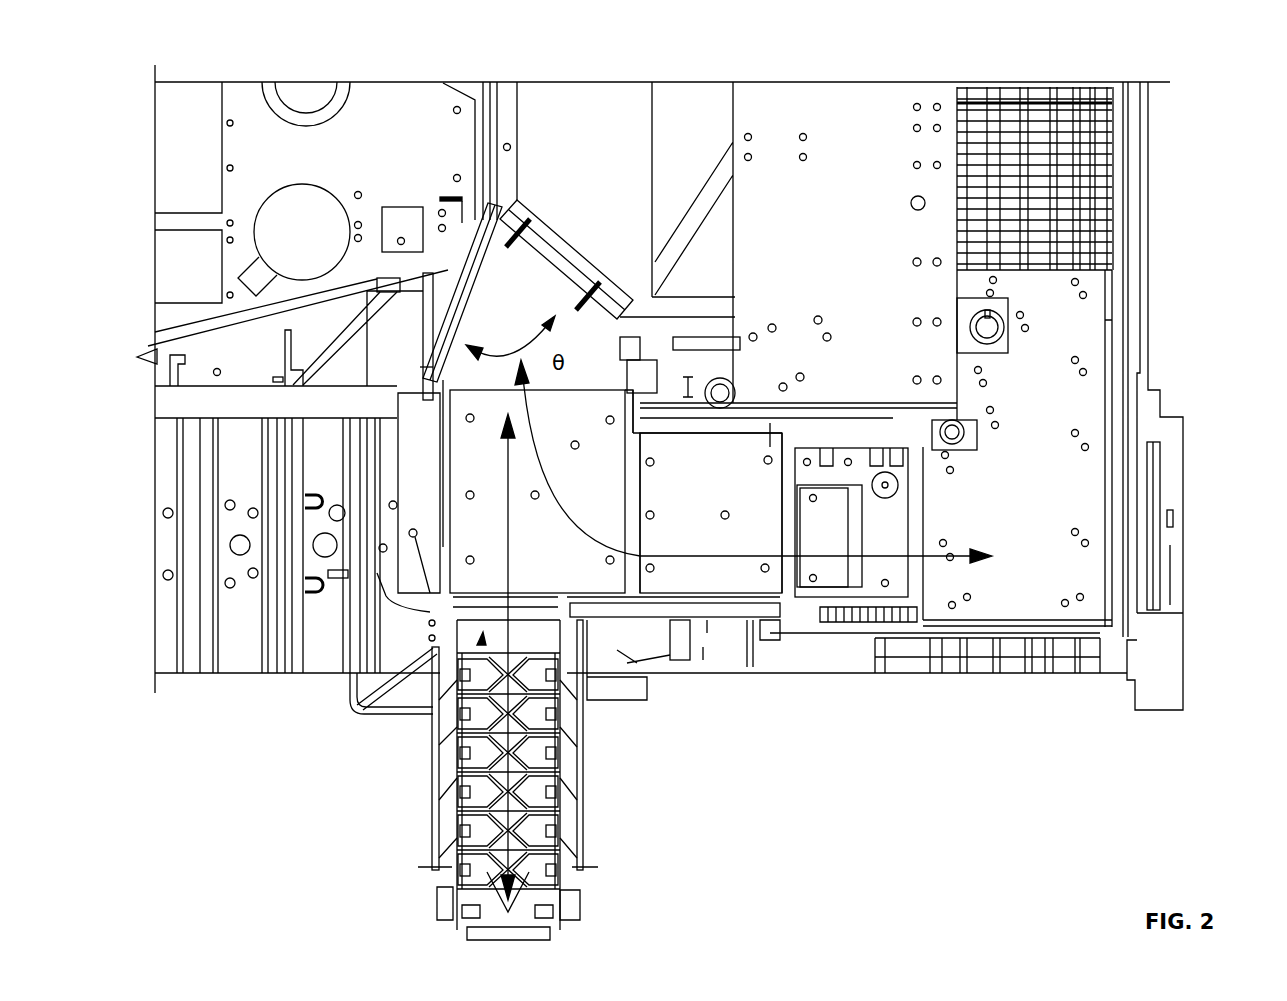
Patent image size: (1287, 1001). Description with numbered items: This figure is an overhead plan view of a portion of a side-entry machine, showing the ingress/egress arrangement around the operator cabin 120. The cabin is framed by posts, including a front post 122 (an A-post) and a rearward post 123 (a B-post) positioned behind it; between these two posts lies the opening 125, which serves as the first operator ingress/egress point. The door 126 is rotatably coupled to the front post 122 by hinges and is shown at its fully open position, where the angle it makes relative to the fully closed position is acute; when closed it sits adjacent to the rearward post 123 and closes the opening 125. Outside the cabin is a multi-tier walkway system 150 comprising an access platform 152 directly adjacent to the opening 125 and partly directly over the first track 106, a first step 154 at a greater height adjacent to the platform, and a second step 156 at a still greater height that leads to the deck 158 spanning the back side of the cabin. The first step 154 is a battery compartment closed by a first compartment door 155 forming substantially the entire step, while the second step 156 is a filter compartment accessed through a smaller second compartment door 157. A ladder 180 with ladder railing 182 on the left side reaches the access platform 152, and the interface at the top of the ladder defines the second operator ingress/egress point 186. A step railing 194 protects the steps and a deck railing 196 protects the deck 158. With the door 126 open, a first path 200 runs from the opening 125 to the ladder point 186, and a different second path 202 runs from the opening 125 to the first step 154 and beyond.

The first track 106 is at (235, 662).
The operator cabin 120 is at (617, 112).
The front post 122 is at (492, 212).
The rearward post 123 is at (698, 175).
The opening 125 is at (530, 303).
The door 126 is at (462, 270).
The walkway system 150 is at (950, 510).
The access platform 152 is at (582, 565).
The first step 154 is at (703, 493).
The first compartment door 155 is at (640, 585).
The second step 156 is at (895, 565).
The second compartment door 157 is at (825, 575).
The deck 158 is at (1090, 350).
The ladder 180 is at (465, 875).
The ladder railing 182 is at (582, 828).
The second operator ingress/egress point 186 is at (437, 716).
The step railing 194 is at (718, 610).
The deck railing 196 is at (1118, 408).
The first path 200 is at (510, 770).
The second path 202 is at (953, 553).